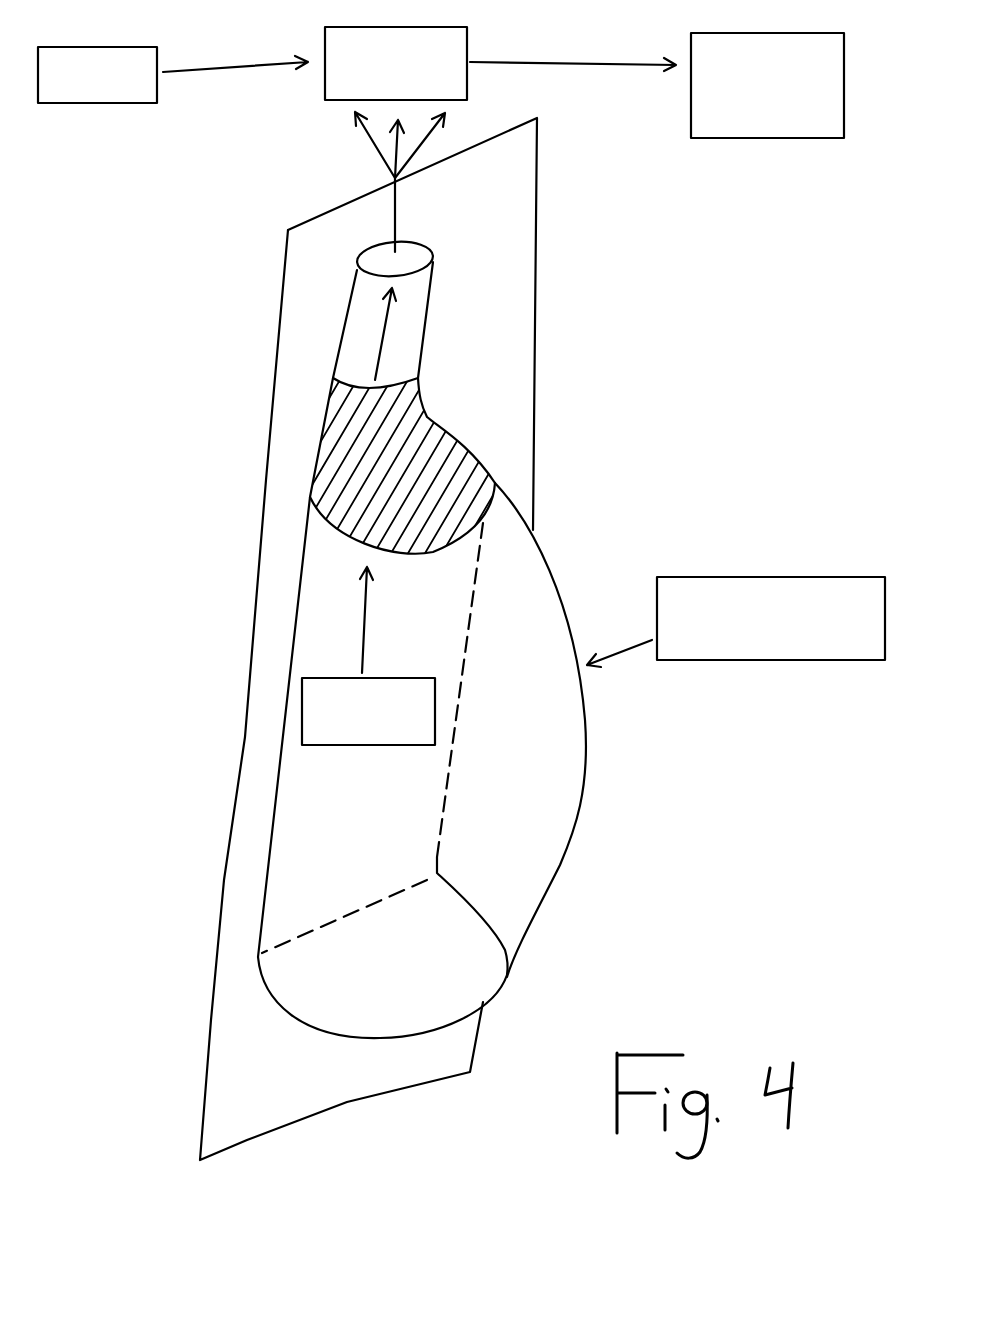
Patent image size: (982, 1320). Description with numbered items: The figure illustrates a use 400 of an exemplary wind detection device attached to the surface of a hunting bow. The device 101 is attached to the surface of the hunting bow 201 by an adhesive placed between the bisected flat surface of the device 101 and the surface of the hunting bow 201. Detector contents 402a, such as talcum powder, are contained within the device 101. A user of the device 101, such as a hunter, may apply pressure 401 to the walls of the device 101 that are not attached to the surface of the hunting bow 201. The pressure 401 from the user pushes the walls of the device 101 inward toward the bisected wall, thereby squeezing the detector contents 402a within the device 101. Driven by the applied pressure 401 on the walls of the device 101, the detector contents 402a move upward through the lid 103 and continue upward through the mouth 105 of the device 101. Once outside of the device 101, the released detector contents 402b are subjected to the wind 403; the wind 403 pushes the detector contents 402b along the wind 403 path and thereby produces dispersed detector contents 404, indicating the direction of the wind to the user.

The device 101 is at (560, 578).
The lid 103 is at (427, 417).
The mouth 105 is at (530, 192).
The hunting bow 201 is at (230, 825).
The use of wind detection device 400 is at (450, 1147).
The pressure 401 is at (742, 577).
The detector contents 402a is at (342, 745).
The detector contents 402b is at (327, 98).
The wind 403 is at (95, 103).
The dispersed detector contents 404 is at (745, 140).